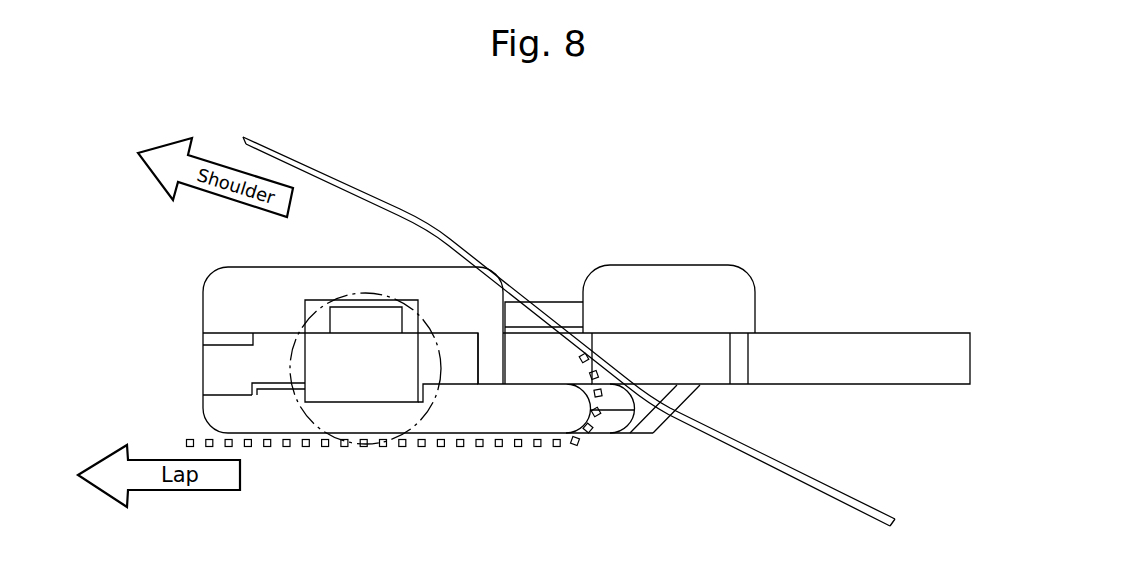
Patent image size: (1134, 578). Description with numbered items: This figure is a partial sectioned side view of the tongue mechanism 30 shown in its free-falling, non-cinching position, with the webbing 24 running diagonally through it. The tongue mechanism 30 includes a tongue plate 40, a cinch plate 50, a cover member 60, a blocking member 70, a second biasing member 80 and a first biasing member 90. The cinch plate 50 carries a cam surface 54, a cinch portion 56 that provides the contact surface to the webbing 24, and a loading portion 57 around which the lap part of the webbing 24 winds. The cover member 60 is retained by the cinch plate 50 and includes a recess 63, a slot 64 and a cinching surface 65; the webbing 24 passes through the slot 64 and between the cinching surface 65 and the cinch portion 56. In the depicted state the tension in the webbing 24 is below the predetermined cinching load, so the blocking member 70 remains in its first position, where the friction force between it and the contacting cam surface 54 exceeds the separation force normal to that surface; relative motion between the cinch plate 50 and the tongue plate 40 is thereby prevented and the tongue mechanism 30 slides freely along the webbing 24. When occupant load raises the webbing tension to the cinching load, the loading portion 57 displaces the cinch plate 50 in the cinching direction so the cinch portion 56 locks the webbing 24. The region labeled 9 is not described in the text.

The cavity 9 is at (444, 357).
The webbing 24 is at (316, 168).
The tongue mechanism 30 is at (808, 178).
The tongue plate 40 is at (866, 333).
The cinch plate 50 is at (684, 265).
The cam surface 54 is at (424, 393).
The cinch portion 56 is at (593, 318).
The loading portion 57 is at (560, 418).
The cover member 60 is at (222, 300).
The recess 63 is at (404, 294).
The slot 64 is at (690, 371).
The cinching surface 65 is at (486, 283).
The blocking member 70 is at (347, 390).
The second biasing member 80 is at (272, 385).
The first biasing member 90 is at (352, 320).